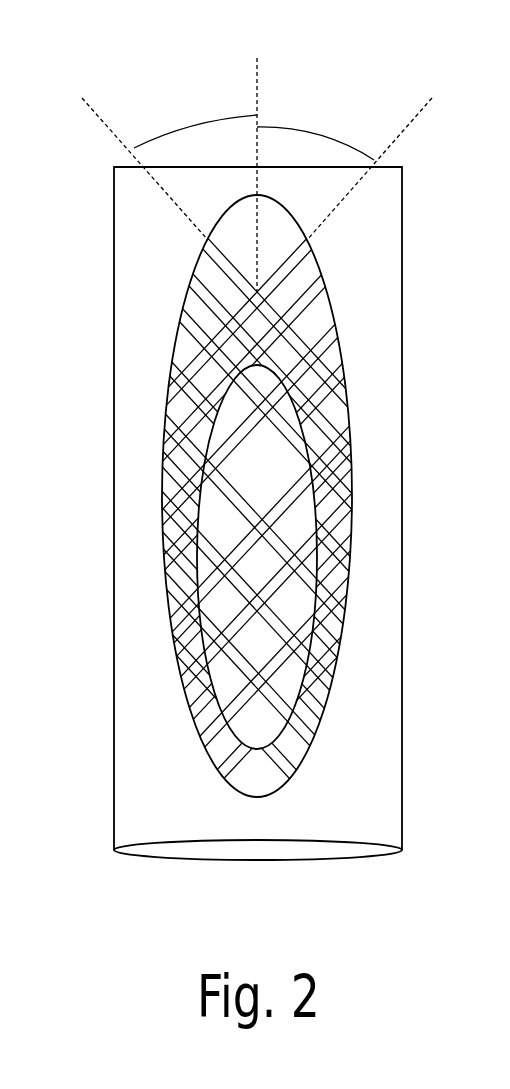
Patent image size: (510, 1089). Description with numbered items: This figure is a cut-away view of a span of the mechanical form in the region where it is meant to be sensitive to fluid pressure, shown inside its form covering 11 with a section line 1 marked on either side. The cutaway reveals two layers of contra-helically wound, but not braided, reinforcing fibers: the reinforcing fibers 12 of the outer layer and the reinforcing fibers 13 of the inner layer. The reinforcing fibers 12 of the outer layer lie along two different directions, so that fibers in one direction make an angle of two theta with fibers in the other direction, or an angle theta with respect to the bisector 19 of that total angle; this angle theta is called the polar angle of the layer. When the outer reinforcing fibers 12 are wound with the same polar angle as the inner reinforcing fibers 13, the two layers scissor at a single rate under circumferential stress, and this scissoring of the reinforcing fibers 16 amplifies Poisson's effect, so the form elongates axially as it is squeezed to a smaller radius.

The section line 1- 1 is at (102, 626).
The form covering 11 is at (123, 304).
The reinforcing fibers of the outer layer 12 is at (235, 265).
The reinforcing fibers of the inner layer 13 is at (281, 488).
The reinforcing fibers 16 is at (278, 325).
The bisector 19 is at (257, 83).